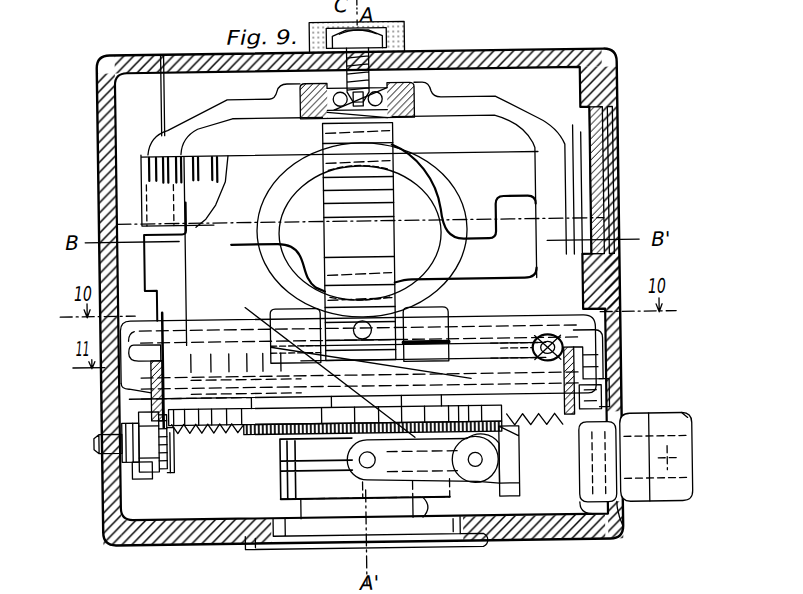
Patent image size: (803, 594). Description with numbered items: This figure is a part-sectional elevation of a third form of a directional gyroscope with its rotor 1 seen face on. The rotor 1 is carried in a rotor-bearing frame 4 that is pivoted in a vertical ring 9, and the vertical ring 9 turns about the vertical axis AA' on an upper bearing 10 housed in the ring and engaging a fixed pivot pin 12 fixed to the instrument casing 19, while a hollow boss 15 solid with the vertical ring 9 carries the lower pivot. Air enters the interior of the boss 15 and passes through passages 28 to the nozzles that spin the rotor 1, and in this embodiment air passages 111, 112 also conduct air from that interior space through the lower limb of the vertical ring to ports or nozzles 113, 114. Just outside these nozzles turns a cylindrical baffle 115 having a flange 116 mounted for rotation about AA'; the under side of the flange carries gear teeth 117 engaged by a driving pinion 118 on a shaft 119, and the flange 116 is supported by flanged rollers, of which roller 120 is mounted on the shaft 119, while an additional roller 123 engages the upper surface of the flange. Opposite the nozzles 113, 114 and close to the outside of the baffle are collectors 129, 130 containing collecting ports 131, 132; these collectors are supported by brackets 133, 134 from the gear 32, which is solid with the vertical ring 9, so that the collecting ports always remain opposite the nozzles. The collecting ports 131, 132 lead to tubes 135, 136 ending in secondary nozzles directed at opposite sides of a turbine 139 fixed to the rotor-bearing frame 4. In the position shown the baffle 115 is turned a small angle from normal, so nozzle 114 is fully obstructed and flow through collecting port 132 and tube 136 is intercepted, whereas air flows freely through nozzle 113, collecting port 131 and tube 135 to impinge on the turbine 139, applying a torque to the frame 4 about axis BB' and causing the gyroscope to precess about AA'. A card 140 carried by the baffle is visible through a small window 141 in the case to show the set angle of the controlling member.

The rotor 1 is at (445, 216).
The rotor-bearing frame 4 is at (513, 272).
The vertical ring 9 is at (522, 114).
The upper bearing 10 is at (398, 88).
The fixed pivot pin 12 is at (385, 70).
The boss 15 is at (173, 210).
The instrument casing 19 is at (100, 111).
The passage 28 is at (325, 433).
The gear 32 is at (297, 422).
The air passage 111 is at (236, 424).
The air passage 112 is at (503, 428).
The nozzle or port 113 is at (118, 388).
The nozzle or port 114 is at (533, 337).
The baffle 115 is at (146, 406).
The flange 116 is at (112, 436).
The gear teeth 117 is at (220, 422).
The driving pinion 118 is at (168, 462).
The shaft 119 is at (128, 446).
The flanged roller 120 is at (145, 460).
The roller 123 is at (600, 389).
The collector 129 is at (140, 357).
The collector 130 is at (582, 367).
The collecting port 131 is at (150, 378).
The collecting port 132 is at (691, 357).
The bracket 133 is at (263, 398).
The bracket 134 is at (422, 328).
The tube 135 is at (133, 360).
The tube 136 is at (540, 340).
The turbine 139 is at (386, 199).
The card 140 is at (143, 199).
The window 141 is at (590, 198).